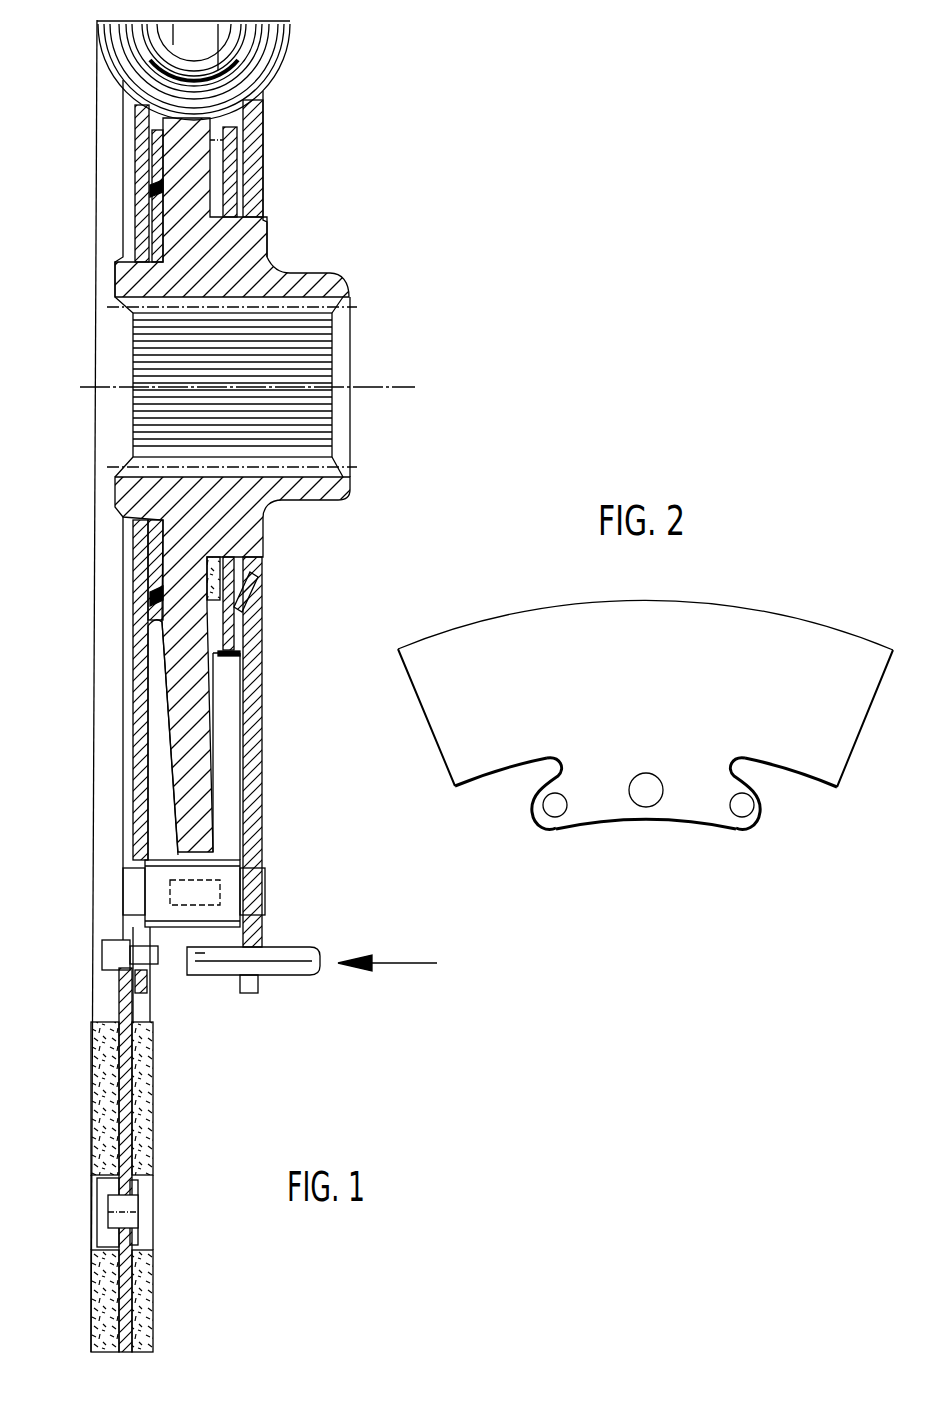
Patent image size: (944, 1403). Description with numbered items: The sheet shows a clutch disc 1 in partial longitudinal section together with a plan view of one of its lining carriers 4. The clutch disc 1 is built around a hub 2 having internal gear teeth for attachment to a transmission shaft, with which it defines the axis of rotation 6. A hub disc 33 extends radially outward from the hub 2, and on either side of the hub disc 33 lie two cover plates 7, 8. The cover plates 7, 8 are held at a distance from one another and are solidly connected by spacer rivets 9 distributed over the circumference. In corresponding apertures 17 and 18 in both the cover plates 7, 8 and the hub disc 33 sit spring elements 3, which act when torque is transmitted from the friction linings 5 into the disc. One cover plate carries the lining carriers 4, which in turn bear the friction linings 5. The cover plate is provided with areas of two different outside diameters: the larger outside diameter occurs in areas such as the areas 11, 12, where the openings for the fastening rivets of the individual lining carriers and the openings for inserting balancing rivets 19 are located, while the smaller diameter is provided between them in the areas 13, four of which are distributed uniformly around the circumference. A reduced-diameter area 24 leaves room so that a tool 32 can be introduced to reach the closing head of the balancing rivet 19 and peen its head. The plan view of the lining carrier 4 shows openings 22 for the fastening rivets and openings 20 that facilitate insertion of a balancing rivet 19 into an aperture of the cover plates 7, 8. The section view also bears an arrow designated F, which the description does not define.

In FIG. 1, the clutch disc 1 is at (378, 232).
In FIG. 1, the hub 2 is at (128, 279).
In FIG. 1, the spring elements 3 is at (283, 58).
In FIG. 1, the lining carrier 4 is at (125, 1320).
In FIG. 2, the lining carrier 4 is at (773, 628).
In FIG. 1, the friction linings 5 is at (105, 1130).
In FIG. 1, the axis of rotation 6 is at (372, 387).
In FIG. 1, the cover plate 7 is at (170, 732).
In FIG. 1, the cover plate 8 is at (140, 734).
In FIG. 1, the spacer rivets 9 is at (157, 885).
In FIG. 1, the area 11 is at (189, 1008).
In FIG. 1, the area 12 is at (165, 984).
In FIG. 1, the area 13 is at (281, 1012).
In FIG. 1, the area 24 is at (250, 987).
In FIG. 1, the apertures 17 is at (257, 181).
In FIG. 1, the apertures 18 is at (267, 100).
In FIG. 1, the balancing rivet 19 is at (112, 955).
In FIG. 1, the openings 20 is at (100, 969).
In FIG. 2, the openings 20 is at (646, 794).
In FIG. 2, the openings 22 is at (556, 807).
In FIG. 1, the tool 32 is at (298, 957).
In FIG. 1, the hub disc 33 is at (183, 817).
In FIG. 1, the force F is at (437, 963).